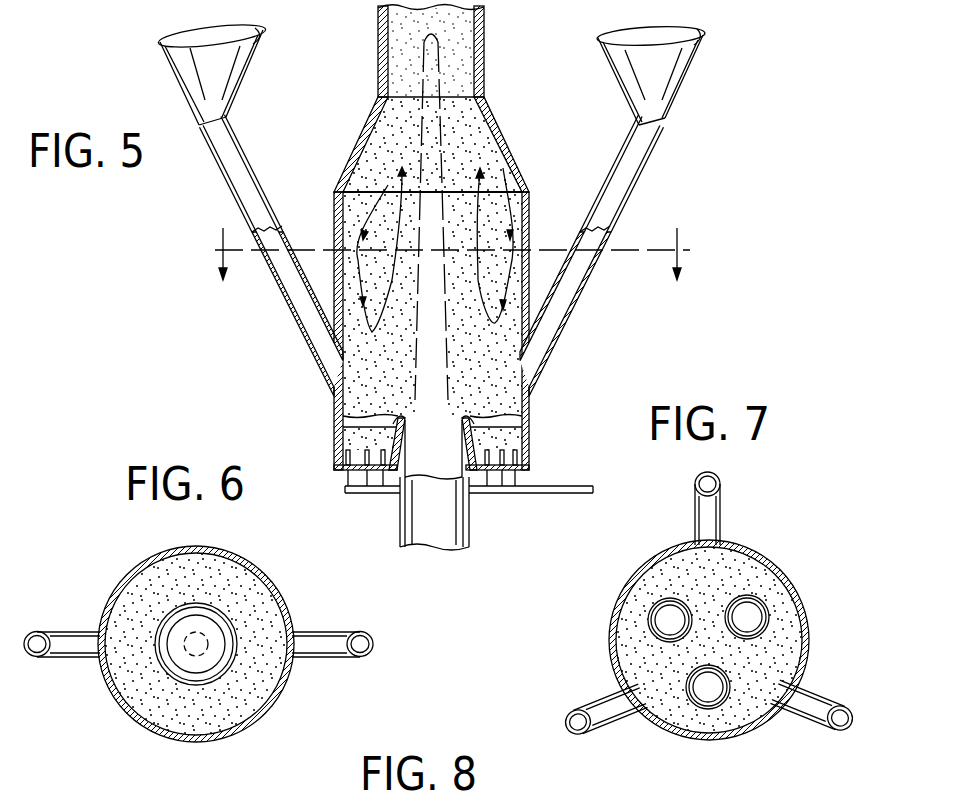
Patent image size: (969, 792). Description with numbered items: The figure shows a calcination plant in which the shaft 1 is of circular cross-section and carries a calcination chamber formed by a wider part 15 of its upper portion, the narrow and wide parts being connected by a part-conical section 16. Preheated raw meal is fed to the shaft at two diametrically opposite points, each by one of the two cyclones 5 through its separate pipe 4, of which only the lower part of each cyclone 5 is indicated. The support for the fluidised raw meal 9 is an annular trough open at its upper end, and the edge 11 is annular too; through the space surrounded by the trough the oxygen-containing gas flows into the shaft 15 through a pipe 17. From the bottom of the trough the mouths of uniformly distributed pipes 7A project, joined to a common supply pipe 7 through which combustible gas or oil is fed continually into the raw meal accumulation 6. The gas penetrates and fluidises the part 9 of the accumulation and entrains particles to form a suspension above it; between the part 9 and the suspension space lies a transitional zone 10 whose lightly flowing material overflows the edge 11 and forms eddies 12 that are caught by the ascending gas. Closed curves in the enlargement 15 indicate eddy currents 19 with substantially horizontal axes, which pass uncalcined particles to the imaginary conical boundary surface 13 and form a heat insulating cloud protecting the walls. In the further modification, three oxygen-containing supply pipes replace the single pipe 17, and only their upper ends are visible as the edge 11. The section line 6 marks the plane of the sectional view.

In FIG. 5, the shaft 1 is at (486, 33).
In FIG. 5, the pipe 4 is at (230, 156).
In FIG. 6, the pipe 4 is at (78, 648).
In FIG. 7, the pipe 4 is at (706, 513).
In FIG. 5, the cyclone 5 is at (190, 62).
In FIG. 5, the raw meal accumulation 6 is at (452, 239).
In FIG. 5, the common supply pipe 7 is at (592, 489).
In FIG. 5, the pipes 7A is at (505, 482).
In FIG. 5, the part of the accumulation 9 is at (355, 433).
In FIG. 5, the transitional zone 10 is at (370, 418).
In FIG. 5, the edge 11 is at (406, 425).
In FIG. 6, the edge 11 is at (222, 662).
In FIG. 7, the edge 11 is at (655, 612).
In FIG. 5, the eddies 12 is at (433, 447).
In FIG. 5, the imaginary conical boundary surface 13 is at (414, 350).
In FIG. 6, the imaginary conical boundary surface 13 is at (182, 652).
In FIG. 5, the wider part of the shaft 15 is at (530, 224).
In FIG. 6, the wider part of the shaft 15 is at (276, 585).
In FIG. 7, the wider part of the shaft 15 is at (810, 621).
In FIG. 5, the part-conical section 16 is at (500, 138).
In FIG. 5, the supply pipe for oxygen-containing gas 17 is at (452, 524).
In FIG. 5, the eddy currents 19 is at (388, 185).